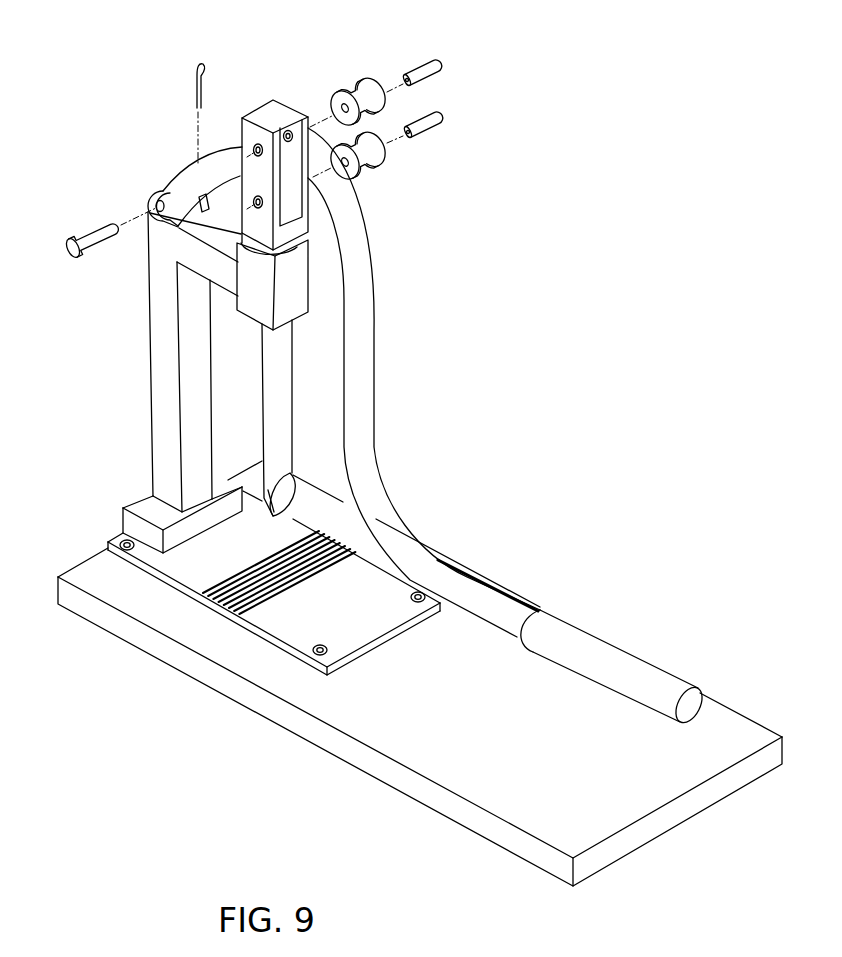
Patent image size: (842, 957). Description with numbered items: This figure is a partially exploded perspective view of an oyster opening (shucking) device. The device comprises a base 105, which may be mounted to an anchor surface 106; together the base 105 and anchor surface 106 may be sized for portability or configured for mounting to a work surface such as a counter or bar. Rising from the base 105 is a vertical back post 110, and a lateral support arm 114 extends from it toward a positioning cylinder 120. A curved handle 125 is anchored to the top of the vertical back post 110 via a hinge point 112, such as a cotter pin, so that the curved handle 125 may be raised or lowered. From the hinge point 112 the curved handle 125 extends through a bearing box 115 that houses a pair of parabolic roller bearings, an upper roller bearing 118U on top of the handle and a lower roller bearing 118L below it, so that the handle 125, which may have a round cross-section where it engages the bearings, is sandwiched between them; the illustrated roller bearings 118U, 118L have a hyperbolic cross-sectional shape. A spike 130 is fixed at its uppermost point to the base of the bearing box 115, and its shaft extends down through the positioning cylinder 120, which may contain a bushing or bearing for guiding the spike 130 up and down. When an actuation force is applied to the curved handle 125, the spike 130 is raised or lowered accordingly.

The base 105 is at (273, 625).
The anchor surface 106 is at (400, 723).
The vertical back post 110 is at (157, 372).
The hinge point 112 is at (92, 226).
The lateral support arm 114 is at (203, 258).
The bearing box 115 is at (277, 110).
The upper parabolic roller bearing 118U is at (377, 100).
The lower parabolic roller bearing 118L is at (368, 164).
The positioning cylinder 120 is at (290, 270).
The curved handle 125 is at (366, 408).
The spike 130 is at (280, 368).